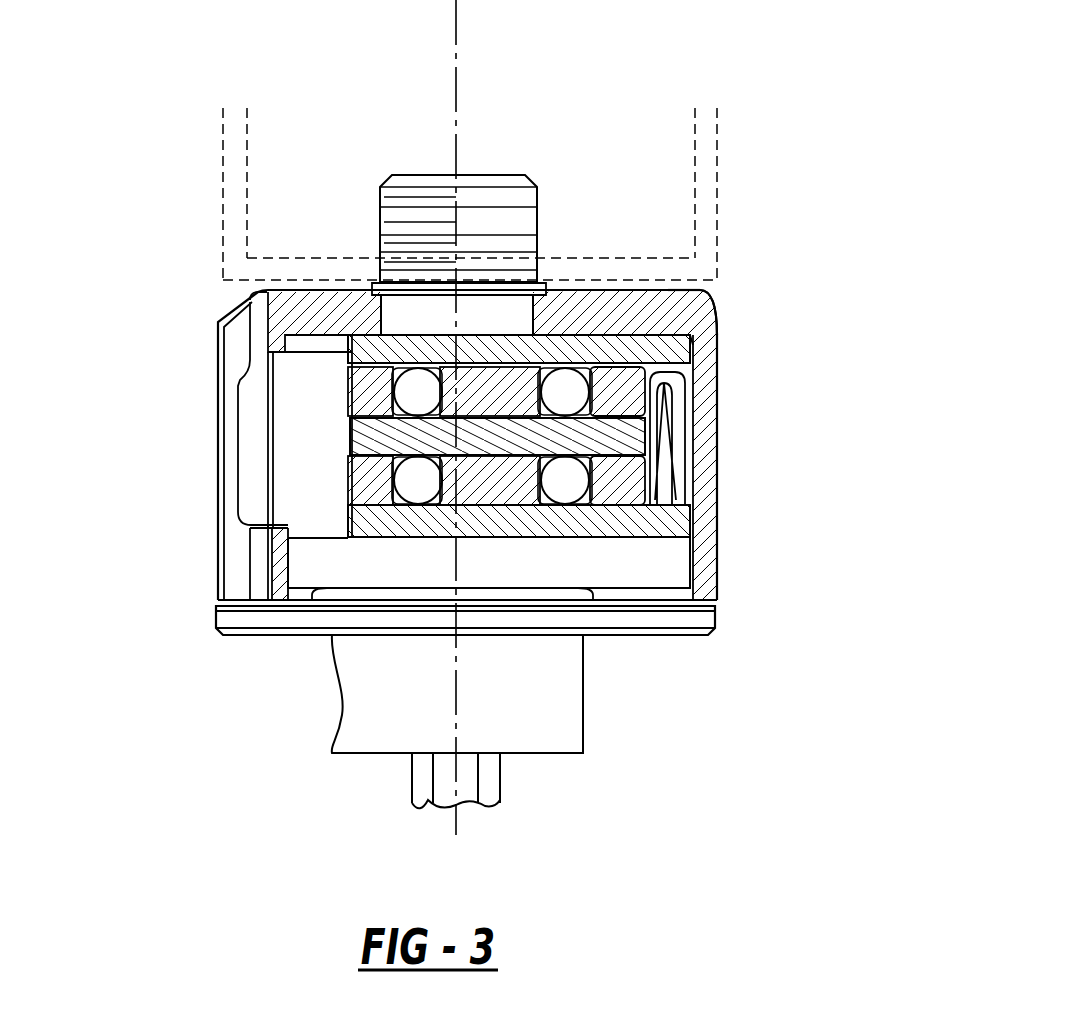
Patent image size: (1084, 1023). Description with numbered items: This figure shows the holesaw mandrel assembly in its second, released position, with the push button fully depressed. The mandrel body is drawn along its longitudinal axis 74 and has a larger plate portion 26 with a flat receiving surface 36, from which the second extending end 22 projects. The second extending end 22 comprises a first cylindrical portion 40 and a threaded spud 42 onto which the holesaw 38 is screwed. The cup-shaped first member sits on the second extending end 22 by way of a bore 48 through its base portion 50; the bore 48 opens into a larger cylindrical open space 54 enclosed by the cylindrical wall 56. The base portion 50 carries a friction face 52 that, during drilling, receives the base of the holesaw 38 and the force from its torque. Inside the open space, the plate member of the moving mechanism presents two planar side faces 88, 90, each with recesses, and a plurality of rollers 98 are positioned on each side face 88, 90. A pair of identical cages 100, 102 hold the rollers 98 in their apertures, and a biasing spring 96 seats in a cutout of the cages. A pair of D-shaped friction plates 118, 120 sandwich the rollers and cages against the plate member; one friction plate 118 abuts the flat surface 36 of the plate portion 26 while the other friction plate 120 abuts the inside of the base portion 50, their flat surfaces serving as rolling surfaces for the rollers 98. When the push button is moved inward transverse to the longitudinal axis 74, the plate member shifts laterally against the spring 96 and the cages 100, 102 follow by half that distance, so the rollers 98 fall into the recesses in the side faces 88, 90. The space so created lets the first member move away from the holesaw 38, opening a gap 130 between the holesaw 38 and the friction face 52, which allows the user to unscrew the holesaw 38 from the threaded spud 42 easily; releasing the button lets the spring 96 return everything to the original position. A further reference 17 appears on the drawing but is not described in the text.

The bearing retainer 17 is at (643, 322).
The second extending end 22 is at (551, 216).
The larger plate portion 26 is at (630, 565).
The flat receiving surface 36 is at (332, 533).
The holesaw 38 is at (705, 197).
The first cylindrical portion 40 is at (413, 315).
The threaded spud 42 is at (417, 207).
The bore 48 is at (542, 278).
The base portion 50 is at (290, 312).
The friction face 52 is at (300, 292).
The larger cylindrical open space 54 is at (690, 338).
The cylindrical wall 56 is at (707, 493).
The longitudinal axis 74 is at (458, 80).
The side face 88 is at (370, 482).
The side face 90 is at (374, 404).
The biasing spring 96 is at (670, 427).
The rollers 98 is at (553, 492).
The cage 100 is at (620, 478).
The cage 102 is at (662, 392).
The friction plate 118 is at (642, 525).
The friction plate 120 is at (652, 334).
The gap 130 is at (670, 287).